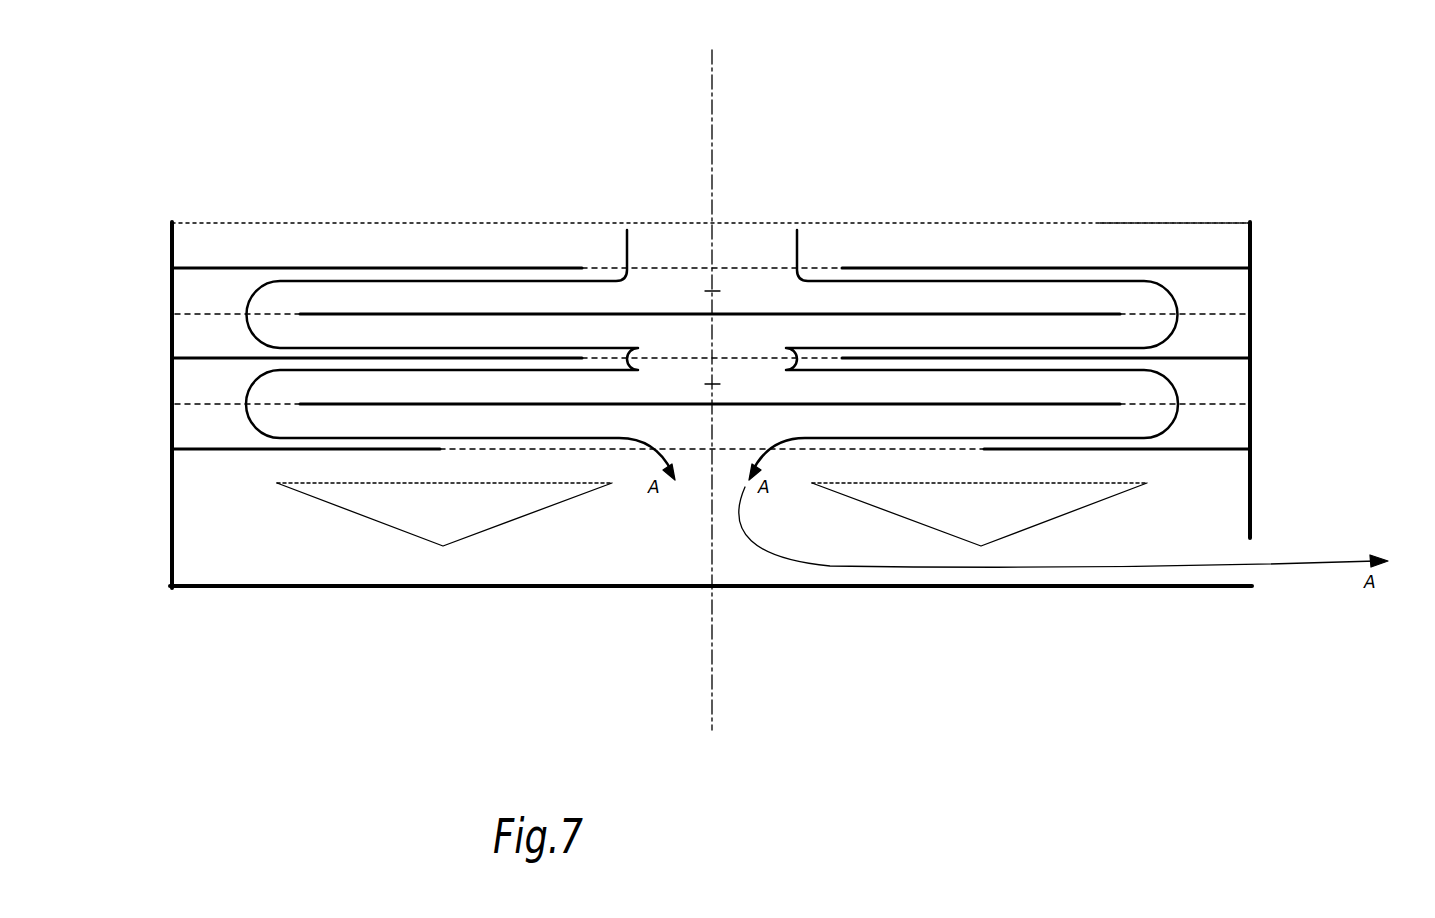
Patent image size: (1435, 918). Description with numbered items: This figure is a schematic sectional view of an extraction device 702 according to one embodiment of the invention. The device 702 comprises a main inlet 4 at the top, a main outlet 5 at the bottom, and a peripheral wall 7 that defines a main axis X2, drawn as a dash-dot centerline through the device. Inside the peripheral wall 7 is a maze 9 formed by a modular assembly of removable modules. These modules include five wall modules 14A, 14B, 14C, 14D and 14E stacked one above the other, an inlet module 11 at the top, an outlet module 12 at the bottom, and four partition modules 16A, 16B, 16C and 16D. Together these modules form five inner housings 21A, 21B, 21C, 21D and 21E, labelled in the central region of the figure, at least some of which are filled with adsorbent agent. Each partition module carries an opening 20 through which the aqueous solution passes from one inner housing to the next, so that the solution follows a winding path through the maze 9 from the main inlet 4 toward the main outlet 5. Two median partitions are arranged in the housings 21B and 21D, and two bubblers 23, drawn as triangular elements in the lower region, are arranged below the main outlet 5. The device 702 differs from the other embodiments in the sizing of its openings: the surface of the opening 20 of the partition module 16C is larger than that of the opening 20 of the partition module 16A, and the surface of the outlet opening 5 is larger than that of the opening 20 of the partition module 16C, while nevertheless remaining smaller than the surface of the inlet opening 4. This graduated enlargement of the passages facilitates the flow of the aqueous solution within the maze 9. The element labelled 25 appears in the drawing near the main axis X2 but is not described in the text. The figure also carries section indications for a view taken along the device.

The extraction device 702 is at (1334, 182).
The peripheral wall 7 is at (1258, 322).
The main inlet 4 is at (428, 218).
The inlet module 11 is at (1143, 222).
The outlet module 12 is at (1218, 450).
The wall module 14A is at (1253, 243).
The wall module 14B is at (1253, 290).
The wall module 14C is at (1253, 336).
The wall module 14D is at (1253, 380).
The wall module 14E is at (1253, 428).
The partition module 16A is at (196, 266).
The partition module 16B is at (196, 312).
The partition module 16C is at (196, 356).
The partition module 16D is at (196, 402).
The opening 20 is at (213, 312).
The maze 9 is at (901, 297).
The channel connection 25 is at (713, 291).
The inner housing 21A is at (675, 247).
The inner housing 21B is at (675, 292).
The inner housing 21C is at (675, 336).
The inner housing 21D is at (675, 380).
The inner housing 21E is at (675, 424).
The bubbler 23 is at (712, 514).
The main outlet 5 is at (697, 462).
The main axis X2 is at (730, 724).